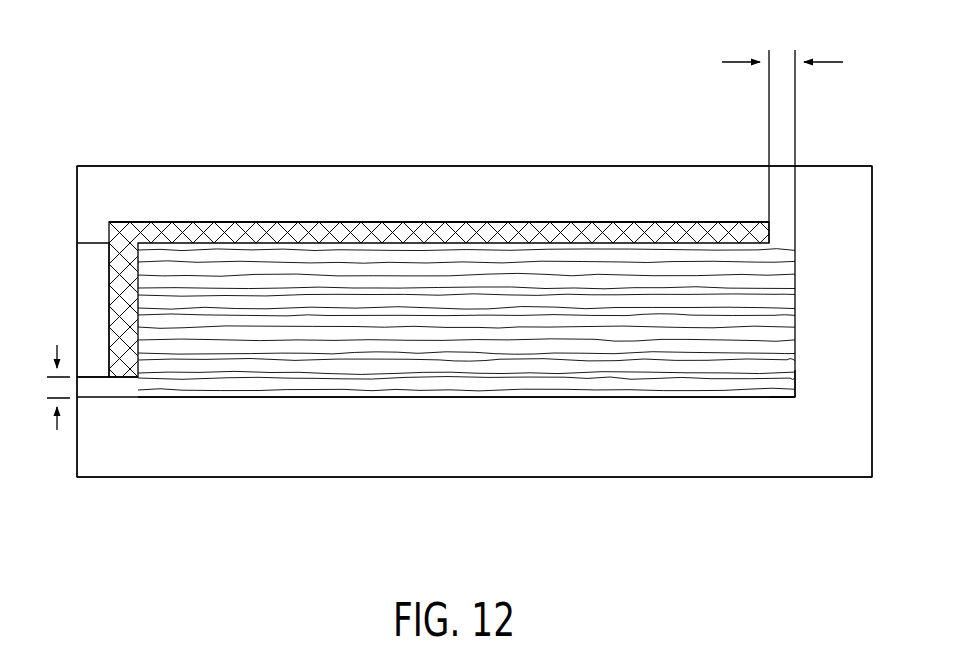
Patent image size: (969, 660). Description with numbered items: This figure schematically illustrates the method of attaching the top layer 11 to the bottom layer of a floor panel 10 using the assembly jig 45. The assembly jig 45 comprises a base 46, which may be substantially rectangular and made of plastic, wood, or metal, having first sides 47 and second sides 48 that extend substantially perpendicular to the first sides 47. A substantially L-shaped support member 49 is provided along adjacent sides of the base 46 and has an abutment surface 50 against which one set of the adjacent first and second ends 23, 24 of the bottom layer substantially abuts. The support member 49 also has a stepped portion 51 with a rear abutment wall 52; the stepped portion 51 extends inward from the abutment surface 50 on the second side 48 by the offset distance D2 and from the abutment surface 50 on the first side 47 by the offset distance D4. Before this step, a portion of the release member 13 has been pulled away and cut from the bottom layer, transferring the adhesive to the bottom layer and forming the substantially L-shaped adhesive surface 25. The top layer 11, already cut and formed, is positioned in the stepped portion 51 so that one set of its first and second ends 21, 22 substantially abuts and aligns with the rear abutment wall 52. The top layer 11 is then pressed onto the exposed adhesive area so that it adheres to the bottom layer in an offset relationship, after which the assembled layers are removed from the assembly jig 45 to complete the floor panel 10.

The floor panel 10 is at (352, 399).
The top layer 11 is at (543, 373).
The release member 13 is at (443, 233).
The first end of the top layer 21 is at (795, 315).
The second end of the top layer 22 is at (662, 398).
The first end of the bottom layer 23 is at (77, 243).
The second end of the bottom layer 24 is at (377, 222).
The L-shaped adhesive surface 25 is at (543, 220).
The assembly jig 45 is at (181, 164).
The base 46 is at (303, 192).
The first sides of the base 47 is at (229, 166).
The second sides of the base 48 is at (77, 218).
The L-shaped support member 49 is at (218, 443).
The abutment surface 50 is at (769, 200).
The stepped portion 51 is at (788, 229).
The rear abutment wall 52 is at (793, 373).
The offset distance D2 is at (782, 62).
The offset distance D4 is at (56, 411).